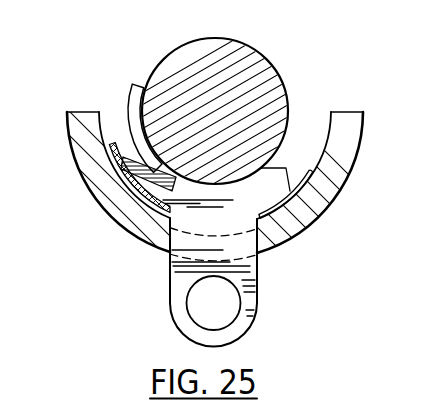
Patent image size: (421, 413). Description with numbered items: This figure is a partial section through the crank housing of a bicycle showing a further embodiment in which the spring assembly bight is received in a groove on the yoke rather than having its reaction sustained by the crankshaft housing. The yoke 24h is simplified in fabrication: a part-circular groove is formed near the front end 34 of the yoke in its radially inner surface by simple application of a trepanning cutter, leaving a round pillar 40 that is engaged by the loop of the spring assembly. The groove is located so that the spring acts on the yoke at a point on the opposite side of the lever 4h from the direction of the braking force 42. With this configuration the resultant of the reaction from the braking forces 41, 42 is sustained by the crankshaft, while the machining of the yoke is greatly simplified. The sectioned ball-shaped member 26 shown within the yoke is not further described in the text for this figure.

The ball 26 is at (181, 159).
The lever 4h is at (259, 284).
The yoke 24h is at (287, 165).
The front end of the yoke 34 is at (124, 196).
The round pillar 40 is at (132, 160).
The braking force 41 is at (128, 140).
The braking force 42 is at (214, 303).